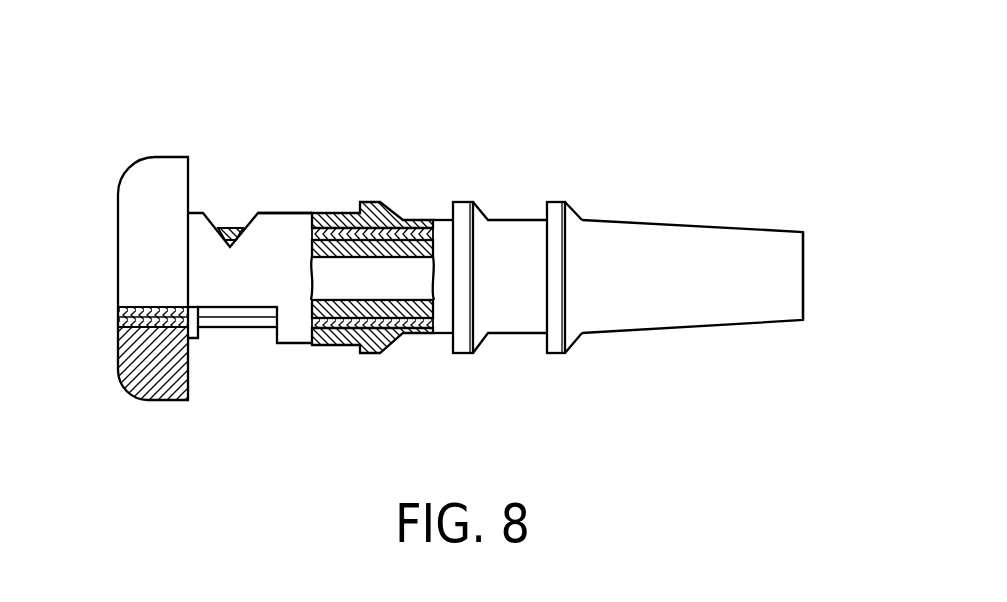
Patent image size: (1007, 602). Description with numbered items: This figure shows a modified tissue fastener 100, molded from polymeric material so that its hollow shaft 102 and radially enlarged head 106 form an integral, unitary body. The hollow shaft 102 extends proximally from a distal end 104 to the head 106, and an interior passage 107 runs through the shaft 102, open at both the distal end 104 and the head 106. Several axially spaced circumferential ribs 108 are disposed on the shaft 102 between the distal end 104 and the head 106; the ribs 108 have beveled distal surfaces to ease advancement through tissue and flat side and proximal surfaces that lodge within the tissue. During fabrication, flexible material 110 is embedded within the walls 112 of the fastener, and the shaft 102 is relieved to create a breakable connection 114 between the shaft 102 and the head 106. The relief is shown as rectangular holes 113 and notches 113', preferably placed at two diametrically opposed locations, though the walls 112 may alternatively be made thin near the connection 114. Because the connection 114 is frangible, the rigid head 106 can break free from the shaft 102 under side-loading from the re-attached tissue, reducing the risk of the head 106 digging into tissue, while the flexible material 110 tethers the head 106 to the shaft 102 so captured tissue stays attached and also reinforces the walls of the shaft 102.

The fastener 100 is at (195, 66).
The hollow shaft 102 is at (645, 221).
The distal end 104 is at (803, 231).
The radially enlarged head 106 is at (155, 157).
The interior passage 107 is at (405, 293).
The circumferential ribs 108 is at (555, 202).
The flexible material 110 is at (225, 228).
The walls 112 is at (333, 348).
The rectangular holes 113 is at (234, 386).
The notches 113' is at (324, 181).
The breakable connection 114 is at (203, 262).